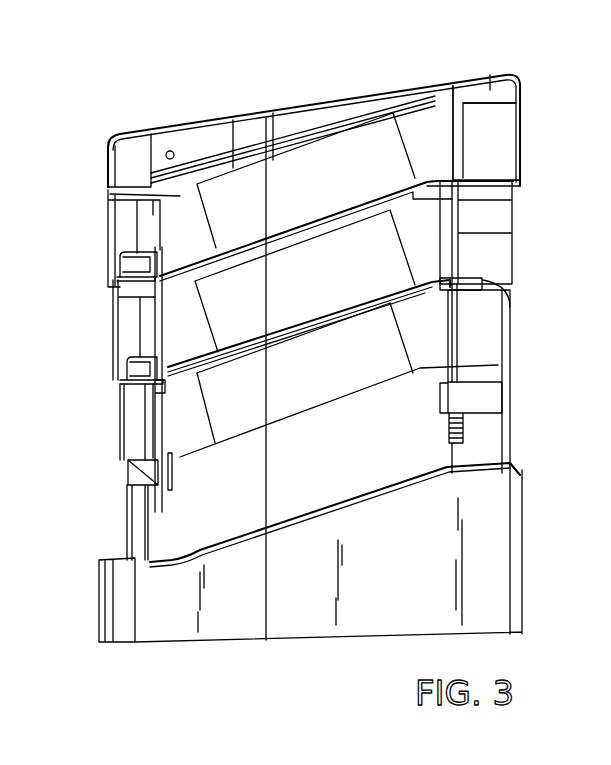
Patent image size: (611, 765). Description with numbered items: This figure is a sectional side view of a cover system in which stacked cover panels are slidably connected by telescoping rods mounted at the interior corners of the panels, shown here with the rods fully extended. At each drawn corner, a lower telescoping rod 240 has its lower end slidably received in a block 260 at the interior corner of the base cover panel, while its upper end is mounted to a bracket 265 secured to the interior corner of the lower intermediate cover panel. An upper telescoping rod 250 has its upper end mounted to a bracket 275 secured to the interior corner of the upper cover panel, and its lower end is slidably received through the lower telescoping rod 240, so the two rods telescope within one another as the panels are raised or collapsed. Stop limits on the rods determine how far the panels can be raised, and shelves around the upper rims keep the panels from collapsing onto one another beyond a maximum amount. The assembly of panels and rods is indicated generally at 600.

The tray assembly 600 is at (342, 367).
The bracket 275 is at (483, 183).
The upper telescoping rod 250 is at (458, 233).
The bracket 265 is at (505, 302).
The lower telescoping rod 240 is at (460, 333).
The block 260 is at (485, 398).